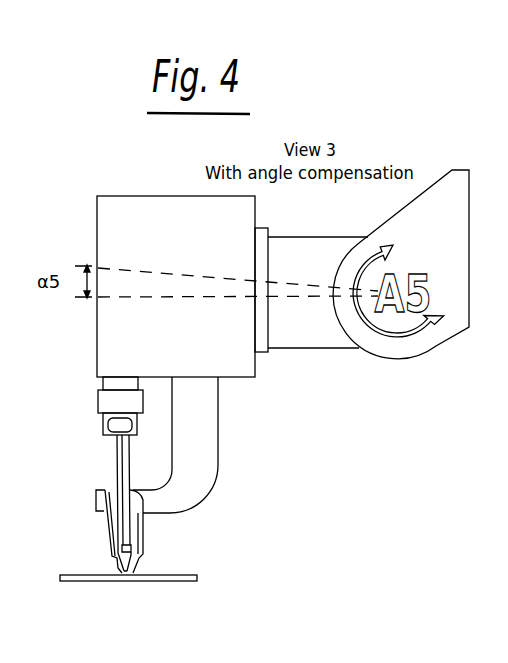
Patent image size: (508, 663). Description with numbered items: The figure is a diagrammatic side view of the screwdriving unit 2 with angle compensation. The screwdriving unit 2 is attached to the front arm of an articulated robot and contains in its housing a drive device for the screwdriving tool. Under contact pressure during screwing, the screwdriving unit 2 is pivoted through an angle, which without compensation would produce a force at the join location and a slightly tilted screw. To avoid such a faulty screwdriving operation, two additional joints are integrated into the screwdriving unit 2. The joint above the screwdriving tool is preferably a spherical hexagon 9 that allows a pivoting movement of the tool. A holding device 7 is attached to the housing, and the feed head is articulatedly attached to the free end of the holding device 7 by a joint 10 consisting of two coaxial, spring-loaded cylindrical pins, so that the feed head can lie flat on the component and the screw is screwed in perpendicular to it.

The screwdriving unit 2 is at (123, 213).
The holding device 7 is at (205, 456).
The spherical hexagon 9 is at (120, 432).
The joint 10 is at (92, 513).